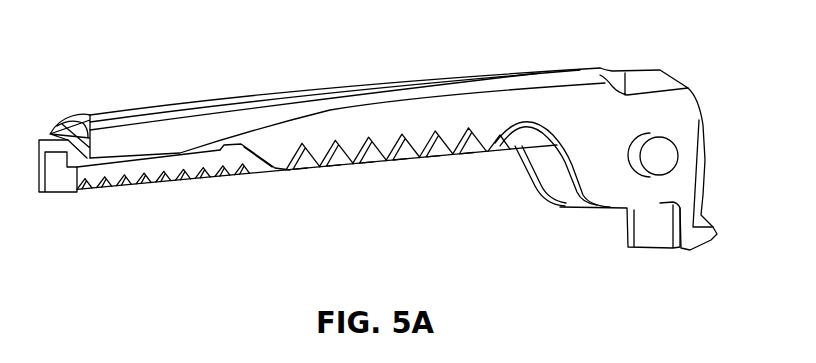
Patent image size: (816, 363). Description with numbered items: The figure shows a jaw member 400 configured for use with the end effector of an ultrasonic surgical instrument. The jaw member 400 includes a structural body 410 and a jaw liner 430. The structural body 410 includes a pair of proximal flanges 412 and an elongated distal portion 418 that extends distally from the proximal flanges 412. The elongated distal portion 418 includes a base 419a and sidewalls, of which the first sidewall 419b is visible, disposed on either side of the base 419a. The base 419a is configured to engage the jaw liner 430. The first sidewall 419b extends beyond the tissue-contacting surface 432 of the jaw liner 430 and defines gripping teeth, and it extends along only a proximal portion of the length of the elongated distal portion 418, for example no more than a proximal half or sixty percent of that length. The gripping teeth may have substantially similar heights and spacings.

The jaw member 400 is at (261, 44).
The structural body 410 is at (533, 93).
The proximal flanges 412 is at (560, 183).
The elongated distal portion 418 is at (397, 108).
The base 419a is at (137, 110).
The first sidewall 419b is at (285, 164).
The jaw liner 430 is at (516, 148).
The tissue-contacting surface 432 is at (140, 188).